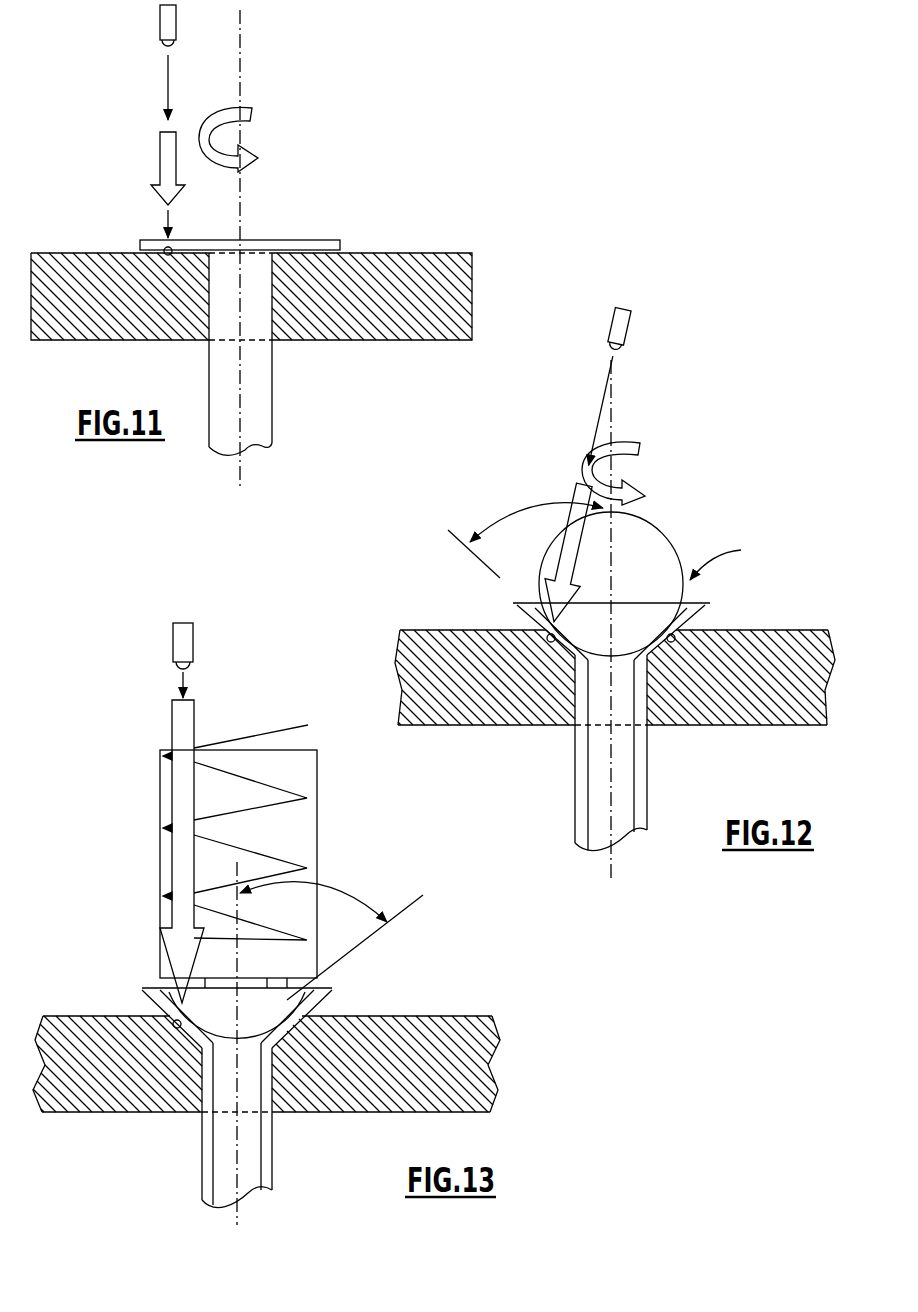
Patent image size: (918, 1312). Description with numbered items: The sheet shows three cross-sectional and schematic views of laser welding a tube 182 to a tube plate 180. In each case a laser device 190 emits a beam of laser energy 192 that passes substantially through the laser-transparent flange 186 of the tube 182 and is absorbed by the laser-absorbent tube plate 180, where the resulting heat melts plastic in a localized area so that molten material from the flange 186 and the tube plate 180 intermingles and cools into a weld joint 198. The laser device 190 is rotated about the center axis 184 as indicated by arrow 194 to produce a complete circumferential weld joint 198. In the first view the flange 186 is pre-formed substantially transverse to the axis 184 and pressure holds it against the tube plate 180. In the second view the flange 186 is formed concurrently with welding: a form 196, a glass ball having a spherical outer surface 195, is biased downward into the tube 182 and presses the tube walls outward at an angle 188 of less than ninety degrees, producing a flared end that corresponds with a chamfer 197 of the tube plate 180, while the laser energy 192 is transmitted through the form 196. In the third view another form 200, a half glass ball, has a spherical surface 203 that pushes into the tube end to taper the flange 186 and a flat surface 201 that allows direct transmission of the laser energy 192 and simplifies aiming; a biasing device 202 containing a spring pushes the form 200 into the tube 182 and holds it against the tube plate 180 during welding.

In FIG. 11, the tube plate 180 is at (365, 270).
In FIG. 12, the tube plate 180 is at (728, 656).
In FIG. 13, the tube plate 180 is at (350, 1047).
In FIG. 11, the tube 182 is at (260, 395).
In FIG. 12, the tube 182 is at (641, 773).
In FIG. 13, the tube 182 is at (268, 1138).
In FIG. 11, the axis 184 is at (242, 203).
In FIG. 12, the axis 184 is at (613, 795).
In FIG. 13, the axis 184 is at (240, 1157).
In FIG. 11, the flange 186 is at (311, 245).
In FIG. 12, the flange 186 is at (690, 622).
In FIG. 13, the flange 186 is at (313, 1008).
In FIG. 12, the angle 188 is at (521, 513).
In FIG. 13, the angle 188 is at (345, 887).
In FIG. 11, the laser device 190 is at (160, 22).
In FIG. 12, the laser device 190 is at (628, 333).
In FIG. 13, the laser device 190 is at (189, 643).
In FIG. 11, the laser energy 192 is at (165, 170).
In FIG. 12, the laser energy 192 is at (563, 574).
In FIG. 13, the laser energy 192 is at (189, 724).
In FIG. 11, the arrow 194 is at (226, 117).
In FIG. 12, the arrow 194 is at (637, 492).
In FIG. 12, the spherical outer surface 195 is at (734, 558).
In FIG. 12, the form 196 is at (657, 556).
In FIG. 12, the chamfer 197 is at (562, 658).
In FIG. 11, the weld joint 198 is at (164, 255).
In FIG. 12, the weld joint 198 is at (546, 636).
In FIG. 13, the weld joint 198 is at (190, 1046).
In FIG. 13, the form 200 is at (362, 957).
In FIG. 13, the flat surface 201 is at (283, 985).
In FIG. 13, the biasing device 202 is at (303, 958).
In FIG. 13, the spherical surface 203 is at (225, 1049).